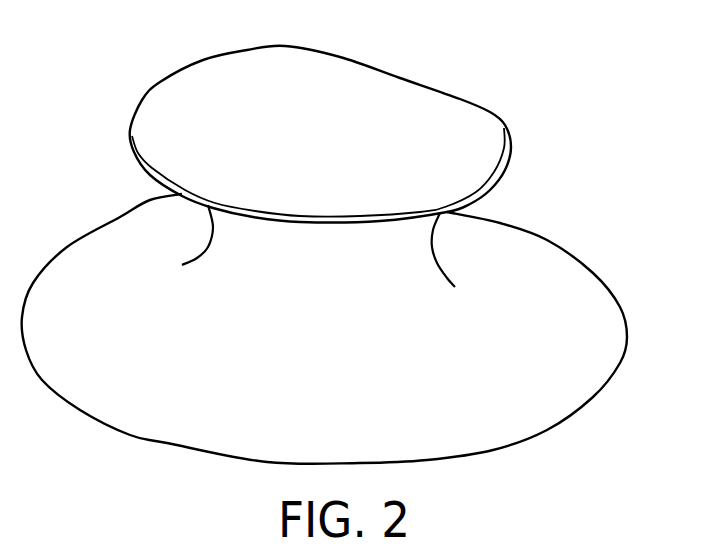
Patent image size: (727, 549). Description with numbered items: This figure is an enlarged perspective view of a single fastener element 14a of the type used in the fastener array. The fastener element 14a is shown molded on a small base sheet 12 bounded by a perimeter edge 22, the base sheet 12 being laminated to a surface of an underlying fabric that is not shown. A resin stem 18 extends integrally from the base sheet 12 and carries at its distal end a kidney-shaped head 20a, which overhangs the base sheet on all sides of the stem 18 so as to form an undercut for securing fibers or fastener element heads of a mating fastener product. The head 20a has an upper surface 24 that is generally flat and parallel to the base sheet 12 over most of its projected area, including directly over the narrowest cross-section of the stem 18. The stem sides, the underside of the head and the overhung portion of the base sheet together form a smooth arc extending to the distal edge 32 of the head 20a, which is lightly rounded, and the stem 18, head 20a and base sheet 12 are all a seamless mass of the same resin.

The fastener element 14a is at (337, 120).
The kidney-shaped head 20a is at (407, 75).
The upper surface 24 is at (267, 122).
The distal edge 32 is at (512, 130).
The resin stem 18 is at (430, 247).
The base sheet 12 is at (361, 309).
The perimeter edge 22 is at (628, 353).